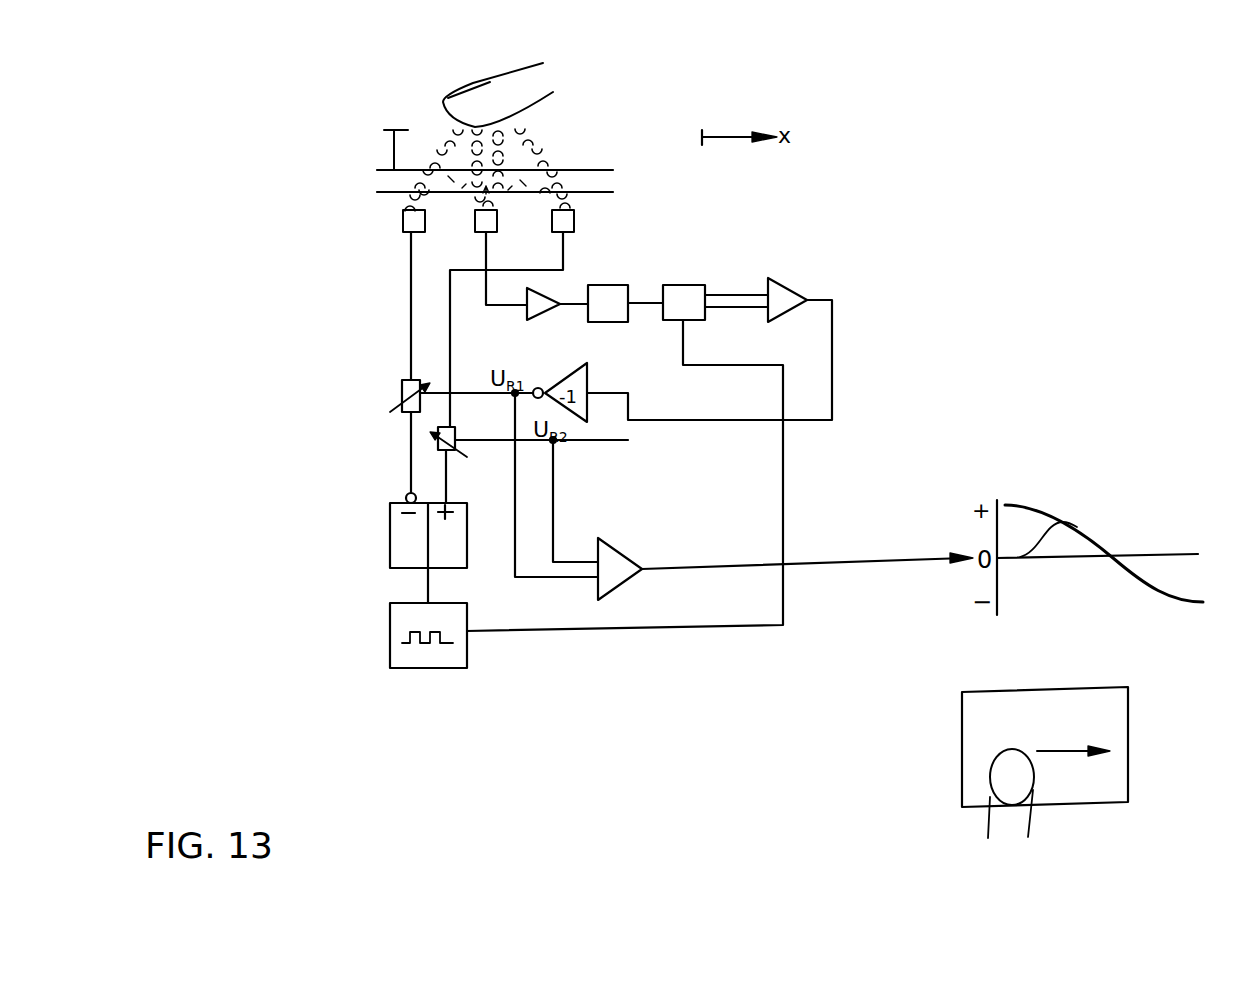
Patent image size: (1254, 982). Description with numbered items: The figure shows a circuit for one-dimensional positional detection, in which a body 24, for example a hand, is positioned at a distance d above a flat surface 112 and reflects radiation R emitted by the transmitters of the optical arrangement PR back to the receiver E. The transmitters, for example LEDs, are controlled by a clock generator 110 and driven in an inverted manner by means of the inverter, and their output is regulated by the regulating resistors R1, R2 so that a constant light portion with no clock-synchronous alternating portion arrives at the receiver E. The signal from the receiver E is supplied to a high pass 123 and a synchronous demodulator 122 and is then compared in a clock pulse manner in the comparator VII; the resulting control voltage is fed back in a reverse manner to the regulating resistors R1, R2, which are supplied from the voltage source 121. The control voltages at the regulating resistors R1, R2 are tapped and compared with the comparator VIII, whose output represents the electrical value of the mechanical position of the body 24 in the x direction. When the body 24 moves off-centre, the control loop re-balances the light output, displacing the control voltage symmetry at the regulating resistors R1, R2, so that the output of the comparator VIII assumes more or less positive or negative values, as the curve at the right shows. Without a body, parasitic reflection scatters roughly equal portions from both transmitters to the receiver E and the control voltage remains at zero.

The body 24 is at (507, 97).
The field region / beads R is at (530, 140).
The surface 112 is at (575, 167).
The distance d is at (394, 148).
The electrode arrangement PR is at (433, 203).
The high pass 123 is at (608, 285).
The synchronous demodulator 122 is at (687, 285).
The comparator VII is at (832, 218).
The comparator VIII is at (681, 503).
The regulating resistor R1 is at (415, 383).
The regulating resistor R2 is at (457, 434).
The voltage source 121 is at (456, 557).
The clock generator 110 is at (455, 657).